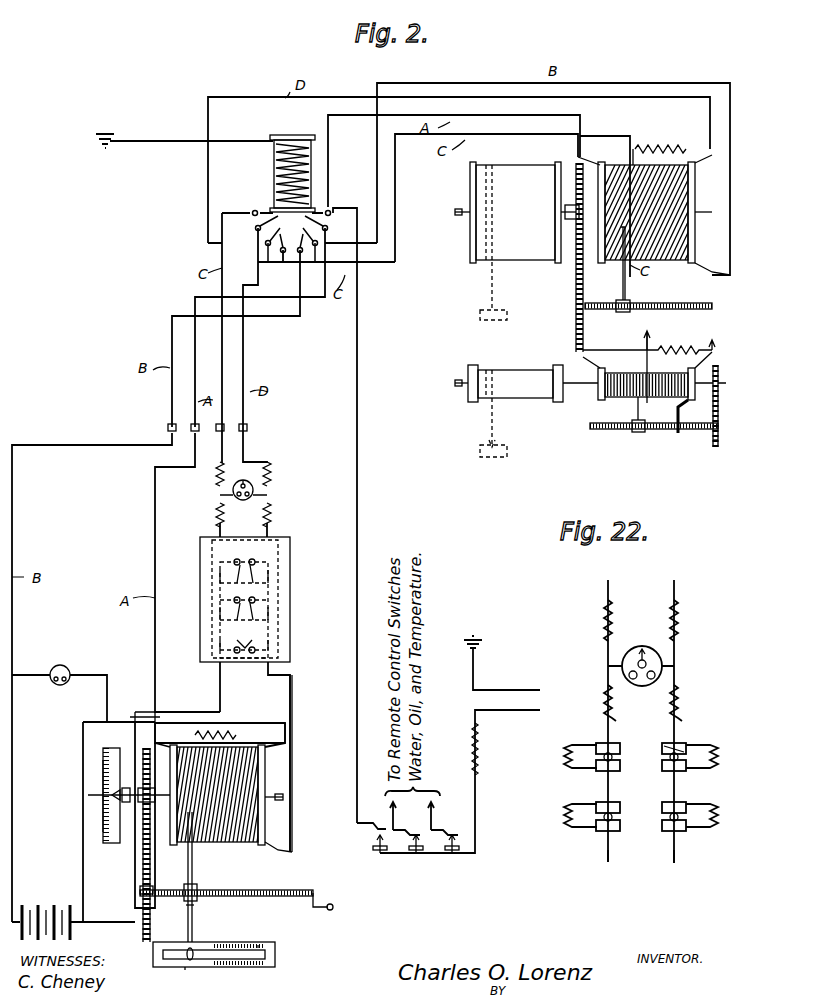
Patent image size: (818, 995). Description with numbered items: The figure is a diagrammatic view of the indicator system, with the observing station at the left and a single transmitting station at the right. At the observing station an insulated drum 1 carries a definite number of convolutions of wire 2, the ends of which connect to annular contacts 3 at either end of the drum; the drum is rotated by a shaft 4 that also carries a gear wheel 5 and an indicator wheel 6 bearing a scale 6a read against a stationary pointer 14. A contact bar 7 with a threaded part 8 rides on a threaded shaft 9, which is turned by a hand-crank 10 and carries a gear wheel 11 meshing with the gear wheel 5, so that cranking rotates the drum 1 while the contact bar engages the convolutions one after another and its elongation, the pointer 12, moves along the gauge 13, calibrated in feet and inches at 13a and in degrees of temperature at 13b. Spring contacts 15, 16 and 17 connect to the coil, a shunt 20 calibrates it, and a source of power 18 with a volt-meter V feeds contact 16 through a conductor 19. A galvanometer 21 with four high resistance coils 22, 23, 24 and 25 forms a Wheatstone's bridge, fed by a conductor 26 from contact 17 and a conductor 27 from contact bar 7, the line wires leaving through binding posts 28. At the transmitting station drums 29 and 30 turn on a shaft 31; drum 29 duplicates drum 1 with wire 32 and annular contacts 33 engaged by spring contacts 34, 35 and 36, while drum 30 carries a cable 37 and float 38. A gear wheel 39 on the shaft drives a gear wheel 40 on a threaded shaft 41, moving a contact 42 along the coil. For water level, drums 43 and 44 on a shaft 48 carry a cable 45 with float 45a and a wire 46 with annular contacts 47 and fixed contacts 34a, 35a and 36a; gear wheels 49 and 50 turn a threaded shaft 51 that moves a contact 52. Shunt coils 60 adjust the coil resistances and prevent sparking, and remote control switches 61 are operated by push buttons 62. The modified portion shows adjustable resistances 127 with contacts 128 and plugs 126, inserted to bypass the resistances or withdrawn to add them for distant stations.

In FIG. 2, the insulated drum 1 is at (262, 846).
In FIG. 2, the wire 2 is at (240, 838).
In FIG. 2, the annular circumferential contact 3 is at (170, 780).
In FIG. 2, the shaft 4 is at (283, 795).
In FIG. 2, the gear wheel 5 is at (143, 837).
In FIG. 2, the indicator wheel 6 is at (116, 740).
In FIG. 2, the scale 6a is at (100, 770).
In FIG. 2, the contact bar 7 is at (193, 860).
In FIG. 2, the threaded part 8 is at (197, 895).
In FIG. 2, the threaded shaft 9 is at (250, 898).
In FIG. 2, the hand-crank 10 is at (322, 902).
In FIG. 2, the gear wheel 11 is at (142, 925).
In FIG. 2, the pointer 12 is at (186, 930).
In FIG. 2, the gauge 13 is at (275, 957).
In FIG. 2, the feet and inches calibration 13a is at (192, 970).
In FIG. 2, the temperature calibration 13b is at (262, 942).
In FIG. 2, the stationary pointer 14 is at (118, 797).
In FIG. 2, the spring contact 15 is at (170, 745).
In FIG. 2, the spring contact 16 is at (288, 745).
In FIG. 2, the spring contact 17 is at (285, 848).
In FIG. 2, the source of electric power 18 is at (50, 900).
In FIG. 2, the conductor 19 is at (258, 720).
In FIG. 2, the shunt 20 is at (226, 728).
In FIG. 2, the balance indicating means 21 is at (255, 490).
In FIG. 22, the balance indicating means 21 is at (638, 646).
In FIG. 2, the high resistance coil 22 is at (272, 468).
In FIG. 22, the high resistance coil 22 is at (678, 622).
In FIG. 2, the high resistance coil 23 is at (272, 515).
In FIG. 22, the high resistance coil 23 is at (678, 704).
In FIG. 2, the high resistance coil 24 is at (216, 480).
In FIG. 22, the high resistance coil 24 is at (604, 626).
In FIG. 2, the high resistance coil 25 is at (216, 515).
In FIG. 22, the high resistance coil 25 is at (604, 702).
In FIG. 2, the conductor 26 is at (292, 695).
In FIG. 22, the conductor 26 is at (670, 865).
In FIG. 2, the conductor 27 is at (140, 710).
In FIG. 2, the binding posts 28 is at (190, 425).
In FIG. 22, the binding posts 28 is at (605, 862).
In FIG. 2, the drum 29 is at (668, 260).
In FIG. 2, the drum 30 is at (515, 204).
In FIG. 2, the shaft 31 is at (462, 214).
In FIG. 2, the wire 32 is at (660, 205).
In FIG. 2, the annular contacts 33 is at (696, 250).
In FIG. 2, the spring contact 34 is at (600, 163).
In FIG. 2, the fixed contact 34a is at (598, 366).
In FIG. 2, the spring contact 35 is at (700, 165).
In FIG. 2, the fixed contact 35a is at (690, 366).
In FIG. 2, the spring contact 36 is at (712, 277).
In FIG. 2, the fixed contact 36a is at (693, 416).
In FIG. 2, the cable 37 is at (494, 283).
In FIG. 2, the float 38 is at (496, 320).
In FIG. 2, the gear wheel 39 is at (575, 162).
In FIG. 2, the gear wheel 40 is at (576, 336).
In FIG. 2, the threaded shaft 41 is at (680, 310).
In FIG. 2, the movable contact 42 is at (612, 285).
In FIG. 2, the drum 43 is at (540, 400).
In FIG. 2, the drum 44 is at (650, 405).
In FIG. 2, the cable 45 is at (488, 425).
In FIG. 2, the float 45a is at (500, 457).
In FIG. 2, the wire 46 is at (603, 400).
In FIG. 2, the annular contacts 47 is at (585, 380).
In FIG. 2, the shaft 48 is at (455, 387).
In FIG. 2, the gear wheel 49 is at (720, 372).
In FIG. 2, the gear wheel 50 is at (720, 440).
In FIG. 2, the threaded shaft 51 is at (600, 432).
In FIG. 2, the contact 52 is at (635, 433).
In FIG. 2, the shunt coil 60 is at (655, 140).
In FIG. 2, the remote control switch 61 is at (313, 185).
In FIG. 2, the push button 62 is at (372, 857).
In FIG. 2, the contact plug 126 is at (245, 640).
In FIG. 22, the contact plug 126 is at (668, 752).
In FIG. 2, the adjustable resistance 127 is at (220, 600).
In FIG. 22, the adjustable resistance 127 is at (712, 808).
In FIG. 2, the contact 128 is at (252, 558).
In FIG. 22, the contact 128 is at (686, 735).
In FIG. 2, the volt-meter V is at (68, 668).